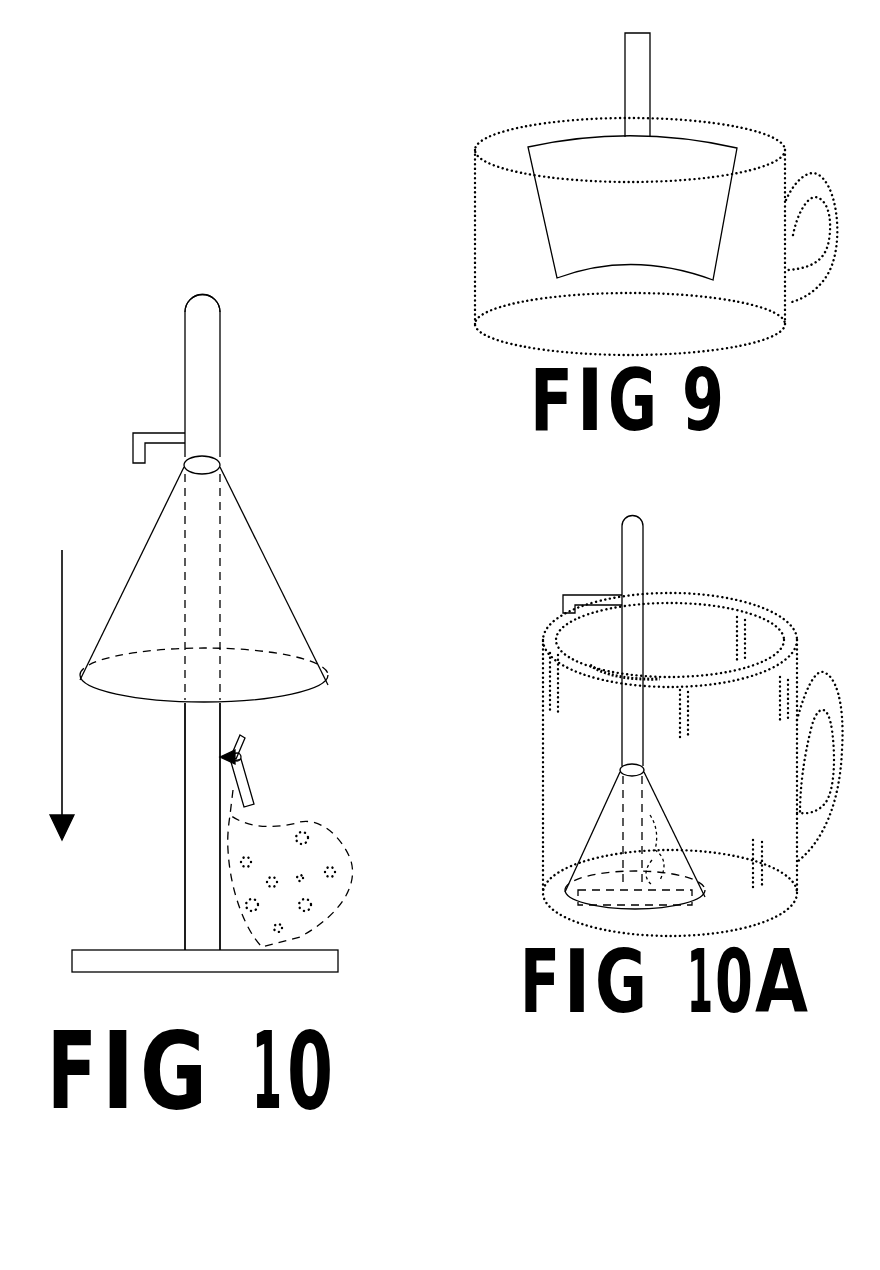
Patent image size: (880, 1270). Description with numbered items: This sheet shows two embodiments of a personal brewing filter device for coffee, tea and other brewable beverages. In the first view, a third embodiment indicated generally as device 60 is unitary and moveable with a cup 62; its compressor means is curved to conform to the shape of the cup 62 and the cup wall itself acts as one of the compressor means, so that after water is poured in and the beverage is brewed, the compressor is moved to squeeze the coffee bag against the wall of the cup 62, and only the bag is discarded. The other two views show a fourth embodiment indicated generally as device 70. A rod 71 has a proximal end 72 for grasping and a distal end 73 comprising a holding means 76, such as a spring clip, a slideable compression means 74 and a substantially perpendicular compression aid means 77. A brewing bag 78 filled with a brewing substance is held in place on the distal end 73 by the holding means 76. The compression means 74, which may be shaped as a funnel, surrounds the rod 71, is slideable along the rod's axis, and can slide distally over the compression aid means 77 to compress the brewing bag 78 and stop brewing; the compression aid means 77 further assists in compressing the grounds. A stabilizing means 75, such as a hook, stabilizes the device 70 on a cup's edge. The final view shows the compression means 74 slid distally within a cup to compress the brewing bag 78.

In FIG. 9, the personal brewing filter device 60 is at (608, 233).
In FIG. 9, the cup 62 is at (475, 153).
In FIG. 10, the personal brewing filter device 70 is at (137, 275).
In FIG. 10, the rod 71 is at (203, 303).
In FIG. 10, the proximal end 72 is at (220, 324).
In FIG. 10, the distal end 73 is at (198, 865).
In FIG. 10, the slideable compression means 74 is at (250, 525).
In FIG. 10, the stabilizing means 75 is at (133, 435).
In FIG. 10A, the stabilizing means 75 is at (593, 600).
In FIG. 10, the holding means 76 is at (243, 770).
In FIG. 10, the compression aid means 77 is at (283, 962).
In FIG. 10, the brewing bag 78 is at (267, 868).